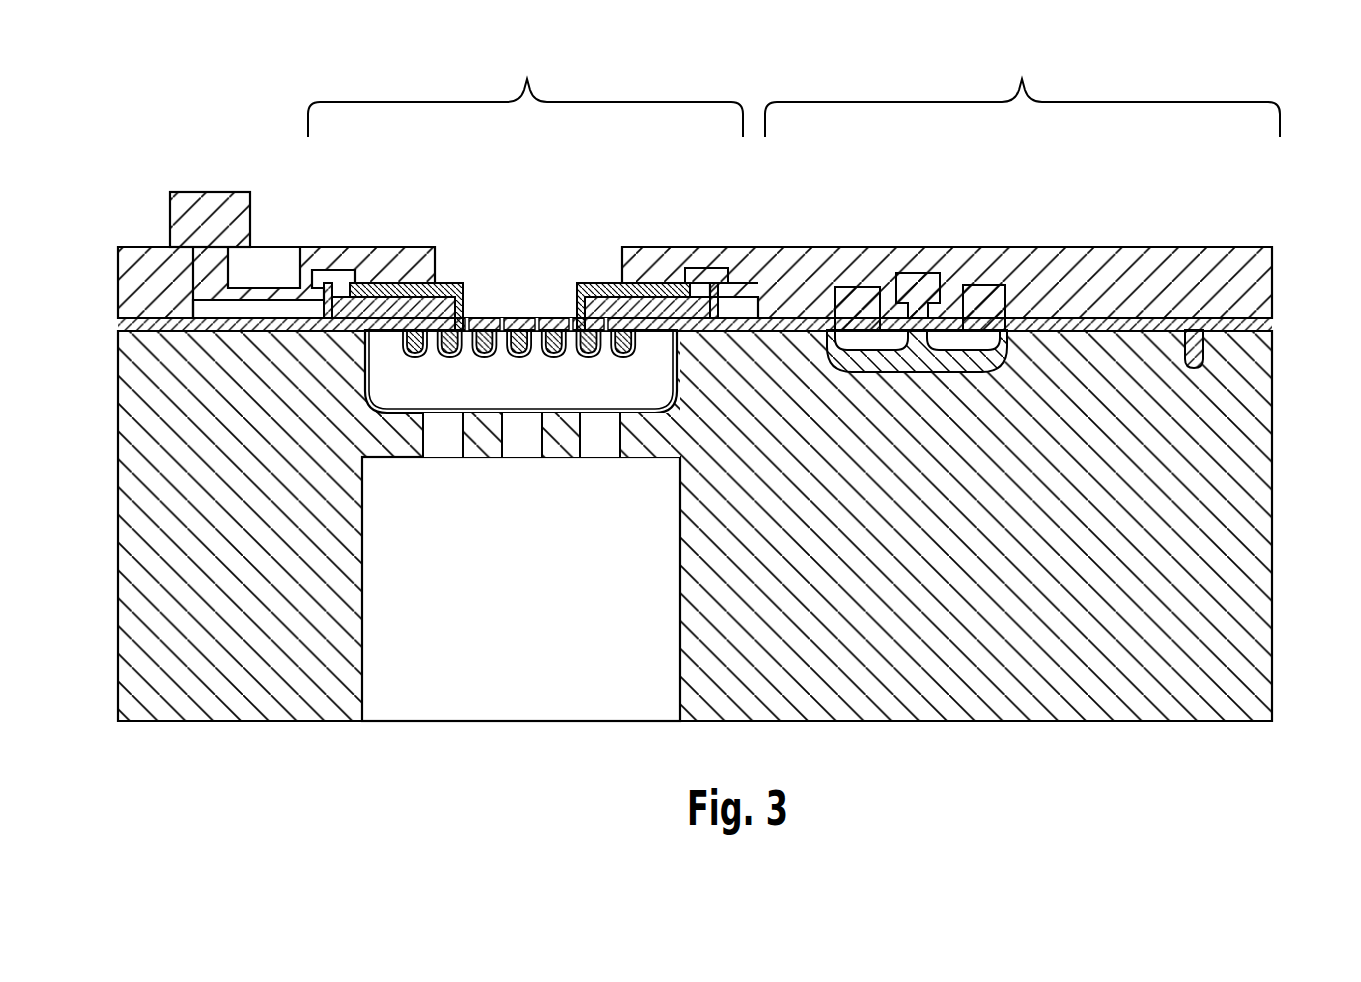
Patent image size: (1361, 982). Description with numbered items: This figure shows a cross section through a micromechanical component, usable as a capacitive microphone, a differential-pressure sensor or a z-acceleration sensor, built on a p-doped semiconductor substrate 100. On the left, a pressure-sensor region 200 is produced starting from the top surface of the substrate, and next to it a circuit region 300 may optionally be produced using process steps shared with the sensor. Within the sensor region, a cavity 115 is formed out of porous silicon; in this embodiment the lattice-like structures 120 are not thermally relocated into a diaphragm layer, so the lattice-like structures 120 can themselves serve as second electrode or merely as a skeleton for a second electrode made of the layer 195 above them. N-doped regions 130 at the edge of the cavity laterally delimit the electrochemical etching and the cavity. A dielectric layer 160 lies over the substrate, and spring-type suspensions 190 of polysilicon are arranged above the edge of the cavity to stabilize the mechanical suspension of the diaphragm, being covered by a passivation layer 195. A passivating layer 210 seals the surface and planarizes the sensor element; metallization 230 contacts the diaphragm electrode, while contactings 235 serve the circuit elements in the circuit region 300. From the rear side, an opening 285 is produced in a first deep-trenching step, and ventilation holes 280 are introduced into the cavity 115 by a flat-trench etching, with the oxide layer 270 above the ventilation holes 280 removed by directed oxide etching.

The semiconductor substrate 100 is at (1243, 398).
The cavity 115 is at (405, 382).
The lattice-like structures 120 is at (606, 316).
The n-doped regions 130 is at (712, 300).
The dielectric layer 160 is at (1265, 320).
The spring-type suspensions 190 is at (388, 283).
The passivation layer 195 is at (447, 283).
The pressure-sensor region 200 is at (525, 89).
The passivating layer 210 is at (1255, 272).
The metallization 230 is at (212, 213).
The contactings 235 is at (982, 290).
The oxide layer 270 is at (594, 357).
The ventilation holes 280 is at (595, 440).
The opening 285 is at (552, 661).
The circuit region 300 is at (1022, 89).